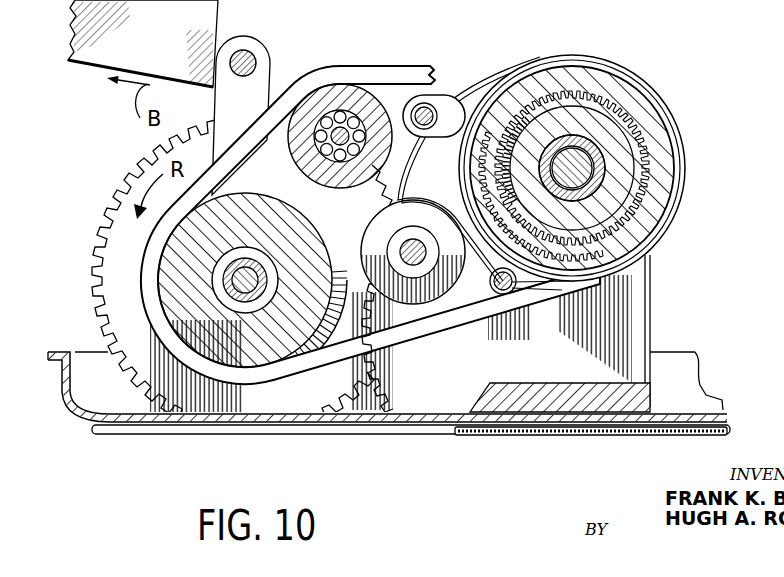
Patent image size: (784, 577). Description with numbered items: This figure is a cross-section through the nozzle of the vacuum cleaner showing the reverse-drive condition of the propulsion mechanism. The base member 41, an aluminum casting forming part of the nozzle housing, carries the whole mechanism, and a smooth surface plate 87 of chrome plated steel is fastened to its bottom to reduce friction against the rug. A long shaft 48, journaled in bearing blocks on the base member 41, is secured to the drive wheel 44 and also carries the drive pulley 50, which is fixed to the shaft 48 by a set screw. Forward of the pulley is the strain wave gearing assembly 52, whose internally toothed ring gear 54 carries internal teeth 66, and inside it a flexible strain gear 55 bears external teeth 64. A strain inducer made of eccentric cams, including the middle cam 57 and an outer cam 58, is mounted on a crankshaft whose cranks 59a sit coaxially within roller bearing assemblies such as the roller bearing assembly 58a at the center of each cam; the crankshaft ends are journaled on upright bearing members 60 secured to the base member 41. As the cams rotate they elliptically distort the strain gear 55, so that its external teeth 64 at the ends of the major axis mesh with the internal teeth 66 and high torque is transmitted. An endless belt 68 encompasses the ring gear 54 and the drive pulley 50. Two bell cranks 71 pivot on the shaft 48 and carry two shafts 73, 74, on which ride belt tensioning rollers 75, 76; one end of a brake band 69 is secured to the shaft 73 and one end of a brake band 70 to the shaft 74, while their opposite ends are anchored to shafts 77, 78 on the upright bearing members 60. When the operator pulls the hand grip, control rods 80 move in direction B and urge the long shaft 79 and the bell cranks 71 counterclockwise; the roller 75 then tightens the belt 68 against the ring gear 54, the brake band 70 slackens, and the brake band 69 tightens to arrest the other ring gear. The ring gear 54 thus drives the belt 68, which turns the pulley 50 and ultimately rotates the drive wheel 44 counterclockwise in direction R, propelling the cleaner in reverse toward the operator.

The base member 41 is at (487, 410).
The drive wheel 44 is at (130, 190).
The long shaft 48 is at (259, 268).
The drive pulley 50 is at (355, 210).
The strain wave gearing assembly 52 is at (577, 152).
The ring gear 54 is at (640, 110).
The strain gear 55 is at (644, 137).
The cam 57 is at (500, 178).
The cam 58 is at (585, 176).
The roller bearing assembly 58a is at (572, 183).
The crank 59a is at (579, 148).
The upright bearing member 60 is at (632, 300).
The external teeth 64 is at (603, 108).
The internal teeth 66 is at (582, 100).
The endless belt 68 is at (403, 72).
The brake band 69 is at (529, 60).
The brake band 70 is at (586, 56).
The bell crank 71 is at (386, 352).
The shaft 73 is at (325, 112).
The shaft 74 is at (404, 240).
The belt tensioning roller 75 is at (337, 95).
The belt tensioning roller 76 is at (413, 252).
The shaft 77 is at (428, 110).
The shaft 78 is at (525, 299).
The long shaft 79 is at (252, 55).
The control rod 80 is at (183, 47).
The smooth surface plate 87 is at (524, 435).